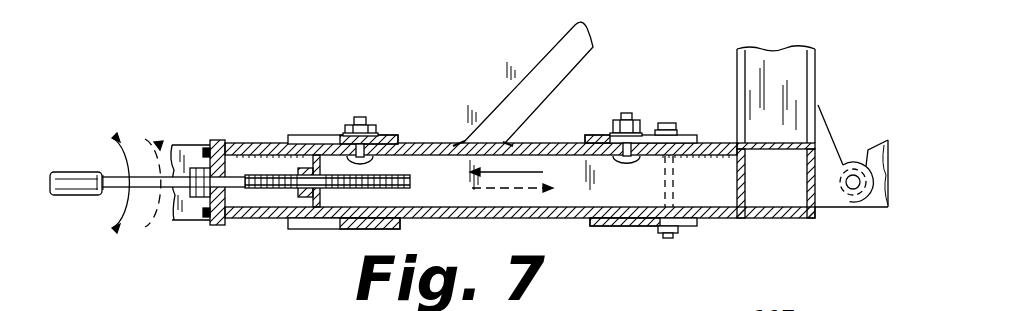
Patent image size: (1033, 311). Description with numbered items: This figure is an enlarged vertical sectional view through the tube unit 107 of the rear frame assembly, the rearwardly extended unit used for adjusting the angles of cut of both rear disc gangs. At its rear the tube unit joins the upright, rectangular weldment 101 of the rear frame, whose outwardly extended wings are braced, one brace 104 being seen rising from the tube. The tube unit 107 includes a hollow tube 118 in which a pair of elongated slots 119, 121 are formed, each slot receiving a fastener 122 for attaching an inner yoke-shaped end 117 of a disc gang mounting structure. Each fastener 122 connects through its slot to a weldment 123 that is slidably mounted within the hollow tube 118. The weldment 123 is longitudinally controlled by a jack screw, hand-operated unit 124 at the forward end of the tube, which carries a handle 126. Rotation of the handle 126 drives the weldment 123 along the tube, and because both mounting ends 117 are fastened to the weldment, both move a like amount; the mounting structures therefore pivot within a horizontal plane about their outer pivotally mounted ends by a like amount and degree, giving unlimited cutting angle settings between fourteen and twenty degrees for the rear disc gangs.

The upright rectangular weldment 101 is at (800, 68).
The brace 104 is at (546, 62).
The tube unit 107 is at (520, 159).
The inner yoke-shaped end 117 is at (363, 228).
The hollow tube 118 is at (553, 218).
The elongated slot 119 is at (315, 146).
The elongated slot 121 is at (574, 141).
The fastener 122 is at (370, 124).
The weldment 123 is at (297, 205).
The jack screw hand-operated unit 124 is at (167, 172).
The handle 126 is at (90, 172).